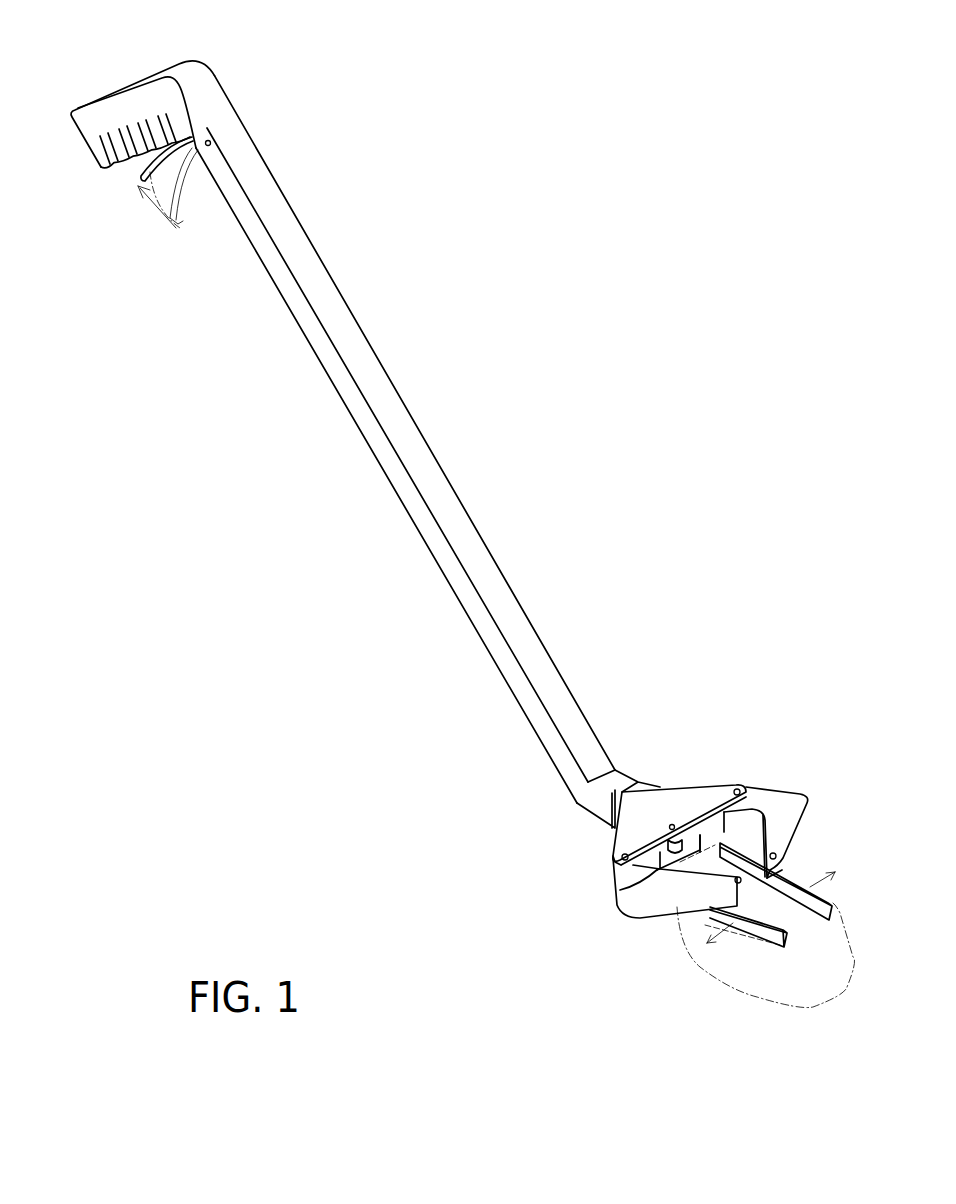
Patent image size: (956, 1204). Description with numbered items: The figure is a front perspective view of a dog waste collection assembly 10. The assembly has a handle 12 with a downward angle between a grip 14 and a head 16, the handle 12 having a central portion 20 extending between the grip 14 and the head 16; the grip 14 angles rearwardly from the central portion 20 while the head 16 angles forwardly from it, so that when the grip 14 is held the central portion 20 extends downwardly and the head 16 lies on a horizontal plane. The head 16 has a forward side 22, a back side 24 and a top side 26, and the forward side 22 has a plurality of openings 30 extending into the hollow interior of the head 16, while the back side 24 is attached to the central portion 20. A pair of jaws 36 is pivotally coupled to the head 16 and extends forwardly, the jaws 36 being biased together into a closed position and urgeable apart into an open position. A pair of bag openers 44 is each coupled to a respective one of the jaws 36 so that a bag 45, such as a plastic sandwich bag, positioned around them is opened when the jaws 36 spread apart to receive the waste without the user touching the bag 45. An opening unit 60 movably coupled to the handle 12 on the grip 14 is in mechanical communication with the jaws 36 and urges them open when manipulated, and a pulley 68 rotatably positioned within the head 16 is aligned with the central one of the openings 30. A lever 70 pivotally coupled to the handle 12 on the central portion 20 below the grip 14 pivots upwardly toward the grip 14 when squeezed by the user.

The dog waste collection assembly 10 is at (678, 158).
The handle 12 is at (258, 152).
The grip 14 is at (117, 90).
The central portion 20 is at (461, 503).
The back side 24 is at (617, 792).
The lever 70 is at (140, 178).
The opening unit 60 is at (185, 233).
The head 16 is at (720, 786).
The top side 26 is at (668, 800).
The forward side 22 is at (668, 863).
The pulley 68 is at (681, 848).
The openings 30 is at (742, 846).
The jaws 36 is at (807, 798).
The bag openers 44 is at (800, 900).
The bag 45 is at (857, 973).